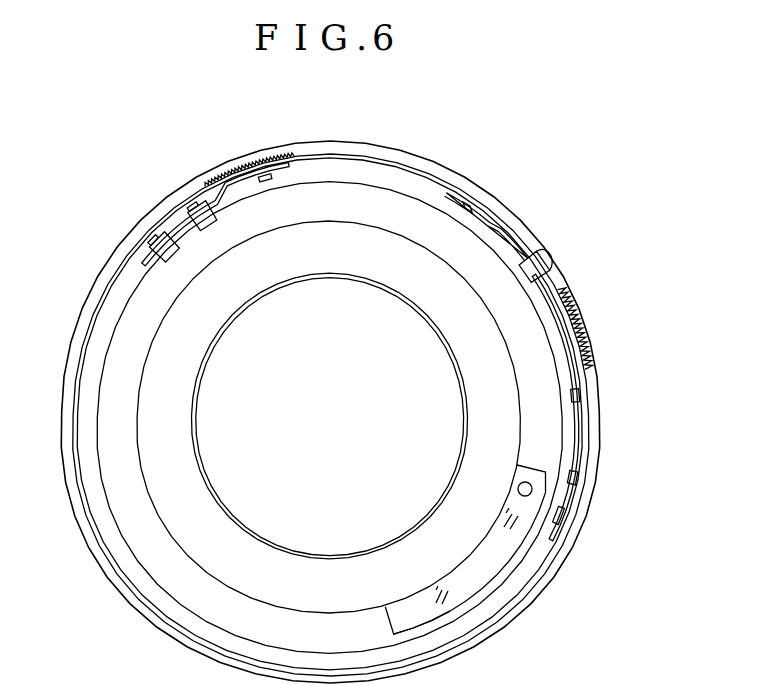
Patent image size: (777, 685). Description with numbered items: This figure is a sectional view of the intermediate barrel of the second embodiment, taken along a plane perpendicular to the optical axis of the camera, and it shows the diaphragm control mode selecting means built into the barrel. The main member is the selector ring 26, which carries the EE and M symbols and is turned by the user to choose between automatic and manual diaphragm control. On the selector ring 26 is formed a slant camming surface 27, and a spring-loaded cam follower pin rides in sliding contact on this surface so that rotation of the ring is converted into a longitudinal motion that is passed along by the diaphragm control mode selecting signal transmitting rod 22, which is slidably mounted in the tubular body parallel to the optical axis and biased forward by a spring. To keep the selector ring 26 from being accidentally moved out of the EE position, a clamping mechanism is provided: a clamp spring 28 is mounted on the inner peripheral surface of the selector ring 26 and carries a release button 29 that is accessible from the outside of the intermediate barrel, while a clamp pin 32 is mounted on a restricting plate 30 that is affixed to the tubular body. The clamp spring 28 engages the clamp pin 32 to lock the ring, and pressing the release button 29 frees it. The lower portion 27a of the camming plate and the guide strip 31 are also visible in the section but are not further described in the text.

The diaphragm control mode selecting signal transmitting rod 22 is at (520, 483).
The selector ring 26 is at (440, 165).
The slant camming surface 27 is at (465, 532).
The plate lower portion 27a is at (487, 558).
The clamp spring 28 is at (565, 333).
The release button 29 is at (540, 245).
The restricting plate 30 is at (187, 228).
The guide strip 31 is at (482, 211).
The clamp pin 32 is at (262, 176).